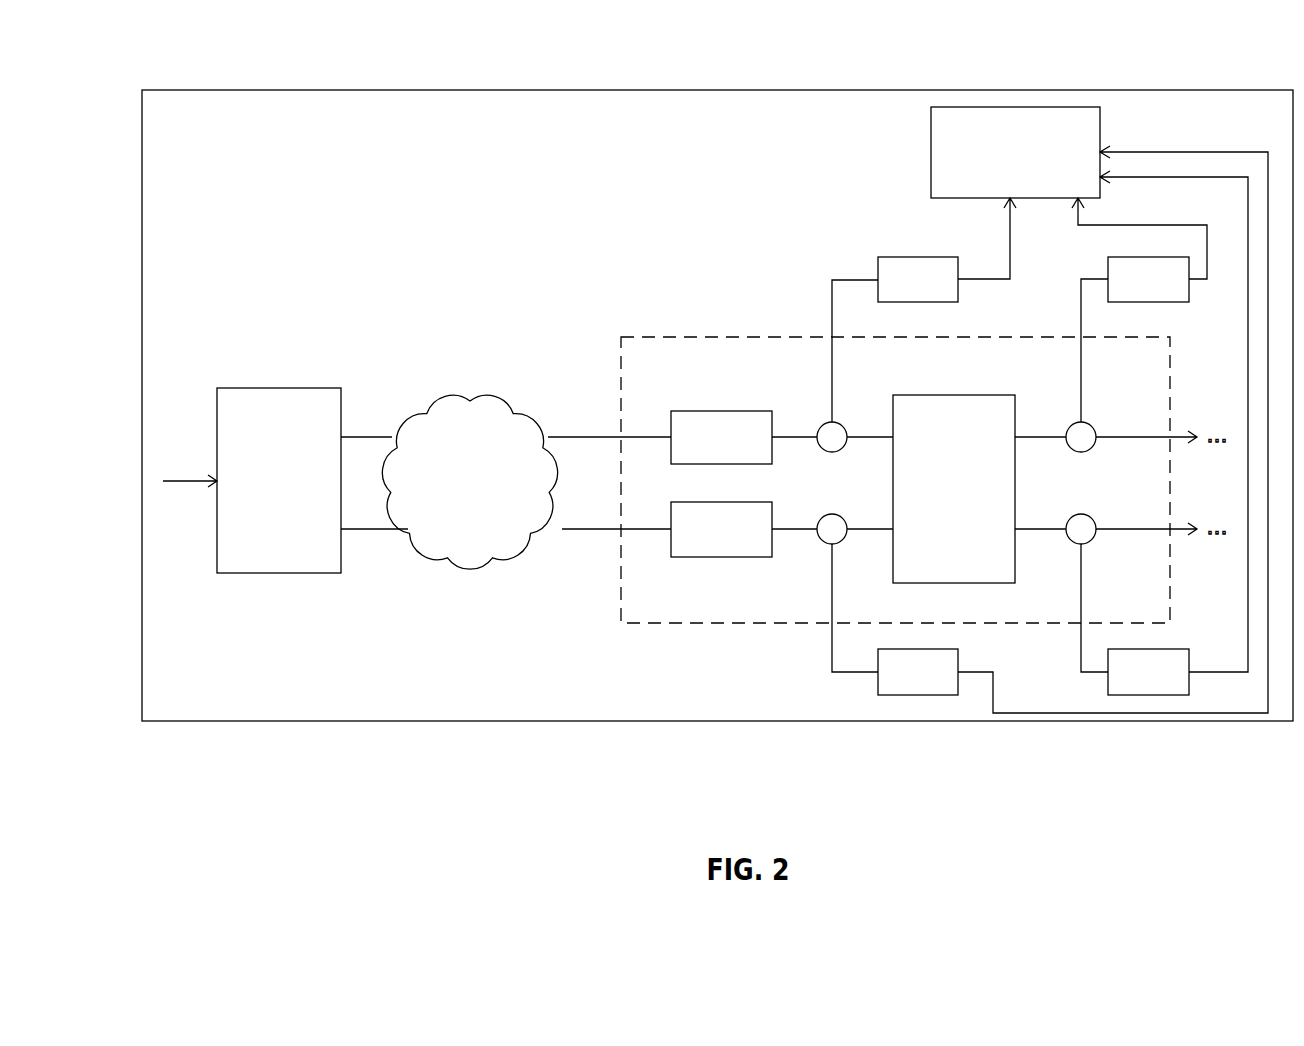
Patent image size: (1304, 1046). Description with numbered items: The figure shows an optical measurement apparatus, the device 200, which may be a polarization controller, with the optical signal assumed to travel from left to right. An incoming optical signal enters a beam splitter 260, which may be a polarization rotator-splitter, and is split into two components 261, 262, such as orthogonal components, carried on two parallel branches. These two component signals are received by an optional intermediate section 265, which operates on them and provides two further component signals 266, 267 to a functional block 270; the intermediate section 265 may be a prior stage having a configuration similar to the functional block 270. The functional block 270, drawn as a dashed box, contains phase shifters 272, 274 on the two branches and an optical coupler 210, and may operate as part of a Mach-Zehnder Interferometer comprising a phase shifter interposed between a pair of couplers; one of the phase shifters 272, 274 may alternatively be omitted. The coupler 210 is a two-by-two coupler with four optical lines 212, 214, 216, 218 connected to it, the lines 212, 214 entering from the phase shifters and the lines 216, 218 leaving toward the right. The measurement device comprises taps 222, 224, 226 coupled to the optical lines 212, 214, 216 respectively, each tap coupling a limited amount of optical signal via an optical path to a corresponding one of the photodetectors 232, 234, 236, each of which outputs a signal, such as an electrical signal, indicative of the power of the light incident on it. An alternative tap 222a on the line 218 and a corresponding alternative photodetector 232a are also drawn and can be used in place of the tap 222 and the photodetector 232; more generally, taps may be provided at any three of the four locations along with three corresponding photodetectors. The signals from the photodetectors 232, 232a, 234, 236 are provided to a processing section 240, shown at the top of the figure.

The device 200 is at (720, 90).
The beam splitter 260 is at (279, 480).
The component 261 is at (363, 437).
The component 262 is at (368, 529).
The intermediate section 265 is at (469, 482).
The further component signal 266 is at (593, 437).
The further component signal 267 is at (593, 529).
The functional block 270 is at (720, 337).
The phase shifter 272 is at (695, 411).
The phase shifter 274 is at (695, 557).
The tap 222 is at (823, 424).
The tap 224 is at (822, 542).
The optical line 212 is at (883, 437).
The optical line 214 is at (880, 529).
The optical coupler 210 is at (954, 489).
The optical line 218 is at (1028, 437).
The optical line 216 is at (1028, 529).
The alternative tap 222a is at (1087, 423).
The tap 226 is at (1088, 543).
The photodetector 232 is at (924, 310).
The alternative photodetector 232a is at (1139, 310).
The photodetector 234 is at (1050, 429).
The photodetector 236 is at (1164, 433).
The processing section 240 is at (1015, 152).